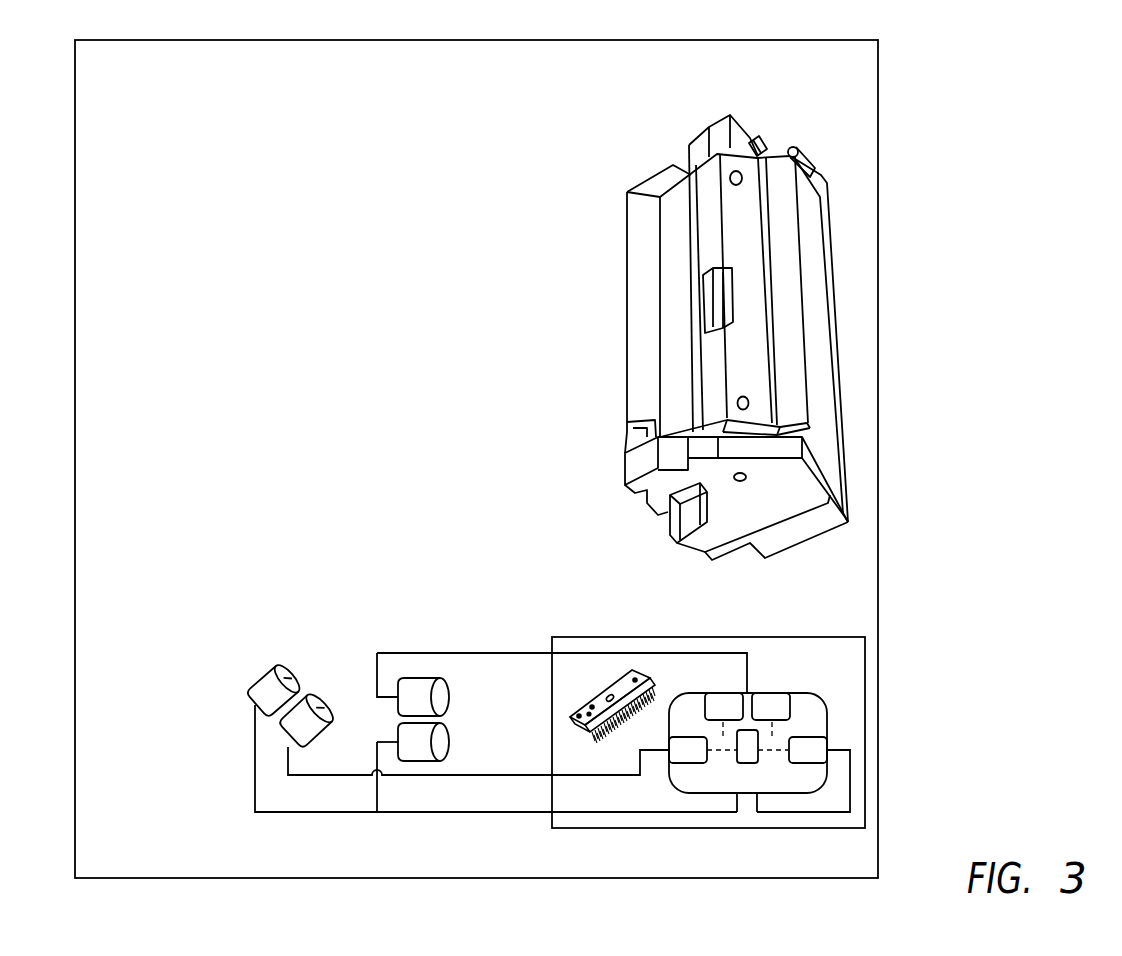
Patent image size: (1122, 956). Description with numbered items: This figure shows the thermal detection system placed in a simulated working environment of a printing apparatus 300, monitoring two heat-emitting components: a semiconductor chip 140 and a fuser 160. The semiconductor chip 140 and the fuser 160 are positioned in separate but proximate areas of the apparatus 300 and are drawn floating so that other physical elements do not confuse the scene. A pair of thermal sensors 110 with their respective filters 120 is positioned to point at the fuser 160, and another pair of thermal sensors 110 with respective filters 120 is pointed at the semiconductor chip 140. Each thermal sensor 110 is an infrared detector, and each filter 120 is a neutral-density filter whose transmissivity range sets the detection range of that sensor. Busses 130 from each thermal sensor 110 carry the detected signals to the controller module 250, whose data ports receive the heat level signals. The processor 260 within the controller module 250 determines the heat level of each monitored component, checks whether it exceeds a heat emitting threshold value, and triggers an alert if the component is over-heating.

The apparatus 300 is at (787, 40).
The thermal sensor 110 is at (263, 675).
The filter 120 is at (297, 672).
The bus 130 is at (255, 782).
The semiconductor chip 140 is at (647, 662).
The fuser 160 is at (626, 312).
The controller module 250 is at (762, 765).
The processor 260 is at (747, 765).